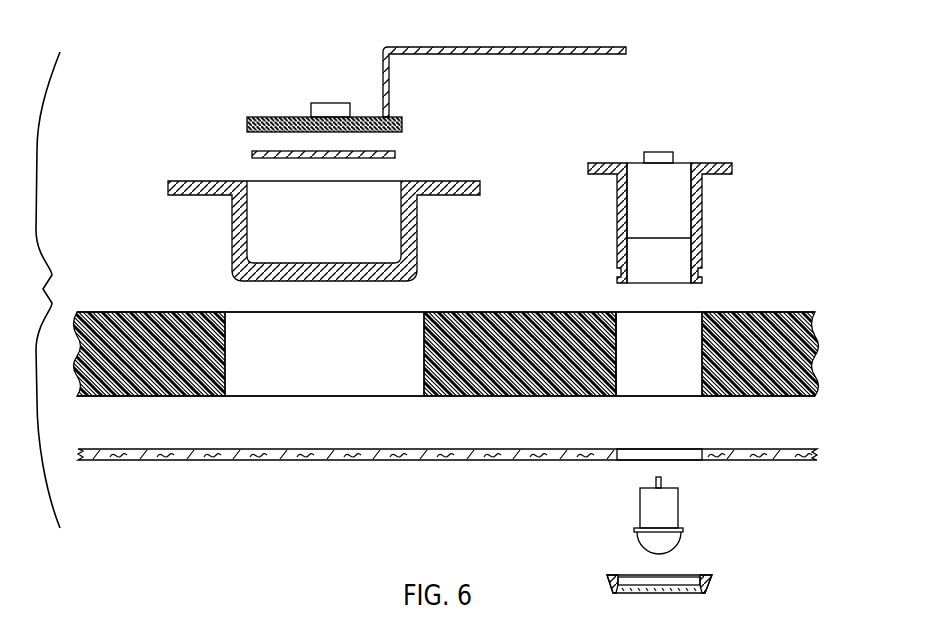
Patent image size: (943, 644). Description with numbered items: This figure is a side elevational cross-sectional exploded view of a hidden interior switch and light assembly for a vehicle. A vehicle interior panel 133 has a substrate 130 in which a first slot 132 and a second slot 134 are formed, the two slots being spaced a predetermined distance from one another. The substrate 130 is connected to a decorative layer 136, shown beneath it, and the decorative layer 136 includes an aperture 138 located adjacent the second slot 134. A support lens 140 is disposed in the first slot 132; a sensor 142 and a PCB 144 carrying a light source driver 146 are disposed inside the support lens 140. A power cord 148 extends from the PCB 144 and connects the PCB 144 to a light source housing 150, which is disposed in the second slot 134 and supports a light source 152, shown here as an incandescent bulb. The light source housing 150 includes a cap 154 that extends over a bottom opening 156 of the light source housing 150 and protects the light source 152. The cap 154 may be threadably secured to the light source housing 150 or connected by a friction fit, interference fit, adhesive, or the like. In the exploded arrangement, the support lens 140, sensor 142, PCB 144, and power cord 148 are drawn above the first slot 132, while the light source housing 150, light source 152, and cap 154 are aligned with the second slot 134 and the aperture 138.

The substrate 130 is at (769, 300).
The first slot 132 is at (335, 363).
The vehicle interior panel 133 is at (39, 290).
The second slot 134 is at (679, 363).
The decorative layer 136 is at (795, 447).
The aperture 138 is at (673, 453).
The support lens 140 is at (200, 180).
The sensor 142 is at (383, 150).
The PCB 144 is at (275, 117).
The light source driver 146 is at (325, 103).
The power cord 148 is at (492, 47).
The light source housing 150 is at (712, 160).
The light source 152 is at (678, 500).
The cap 154 is at (712, 582).
The bottom opening 156 is at (633, 397).